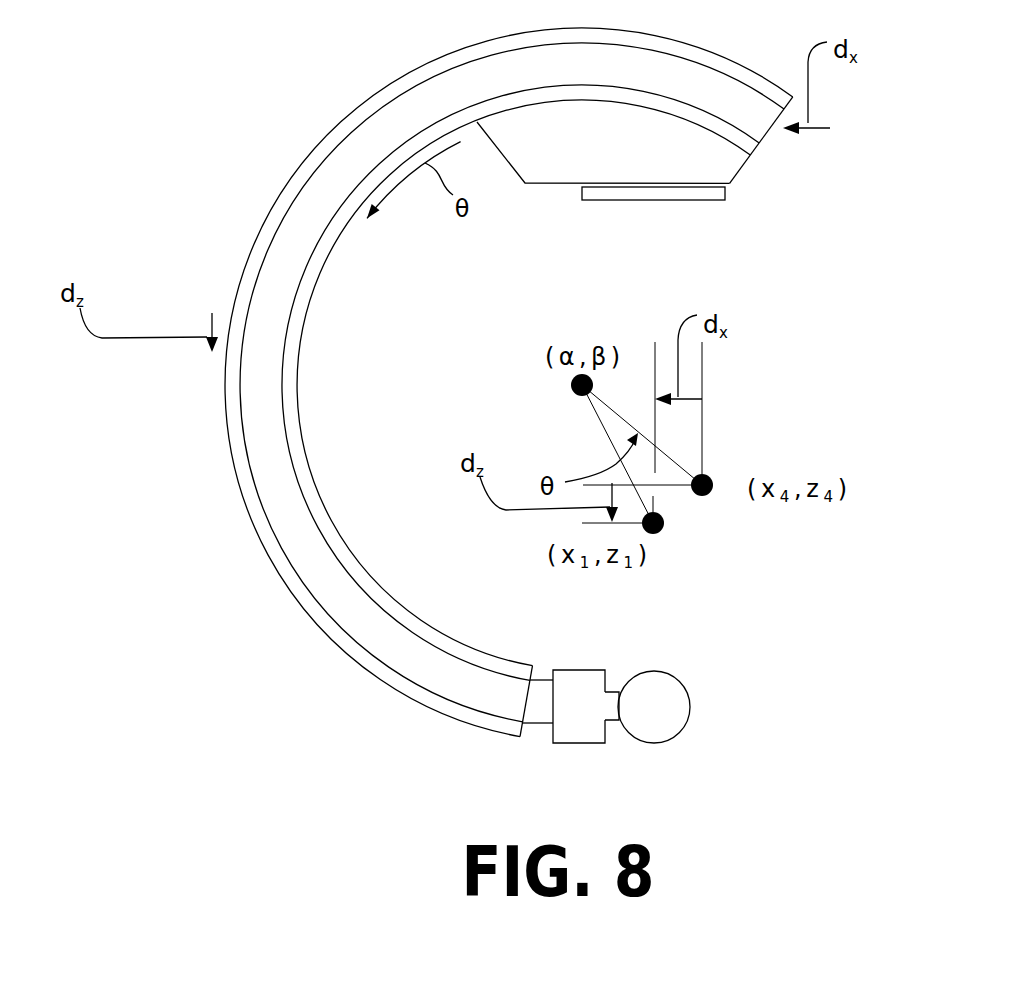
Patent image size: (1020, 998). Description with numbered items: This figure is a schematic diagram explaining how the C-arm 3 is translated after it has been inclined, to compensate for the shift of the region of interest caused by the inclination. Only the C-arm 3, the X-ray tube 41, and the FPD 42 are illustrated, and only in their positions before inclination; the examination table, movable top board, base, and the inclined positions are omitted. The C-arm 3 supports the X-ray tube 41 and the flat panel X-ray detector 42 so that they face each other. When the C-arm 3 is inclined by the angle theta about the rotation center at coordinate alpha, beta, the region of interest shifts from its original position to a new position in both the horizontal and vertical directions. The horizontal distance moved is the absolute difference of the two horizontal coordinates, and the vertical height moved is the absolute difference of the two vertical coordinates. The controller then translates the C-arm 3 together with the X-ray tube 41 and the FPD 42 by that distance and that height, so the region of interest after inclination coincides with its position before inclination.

The C-arm 3 is at (353, 158).
The X-ray tube 41 is at (675, 712).
The flat panel X-ray detector 42 is at (712, 200).